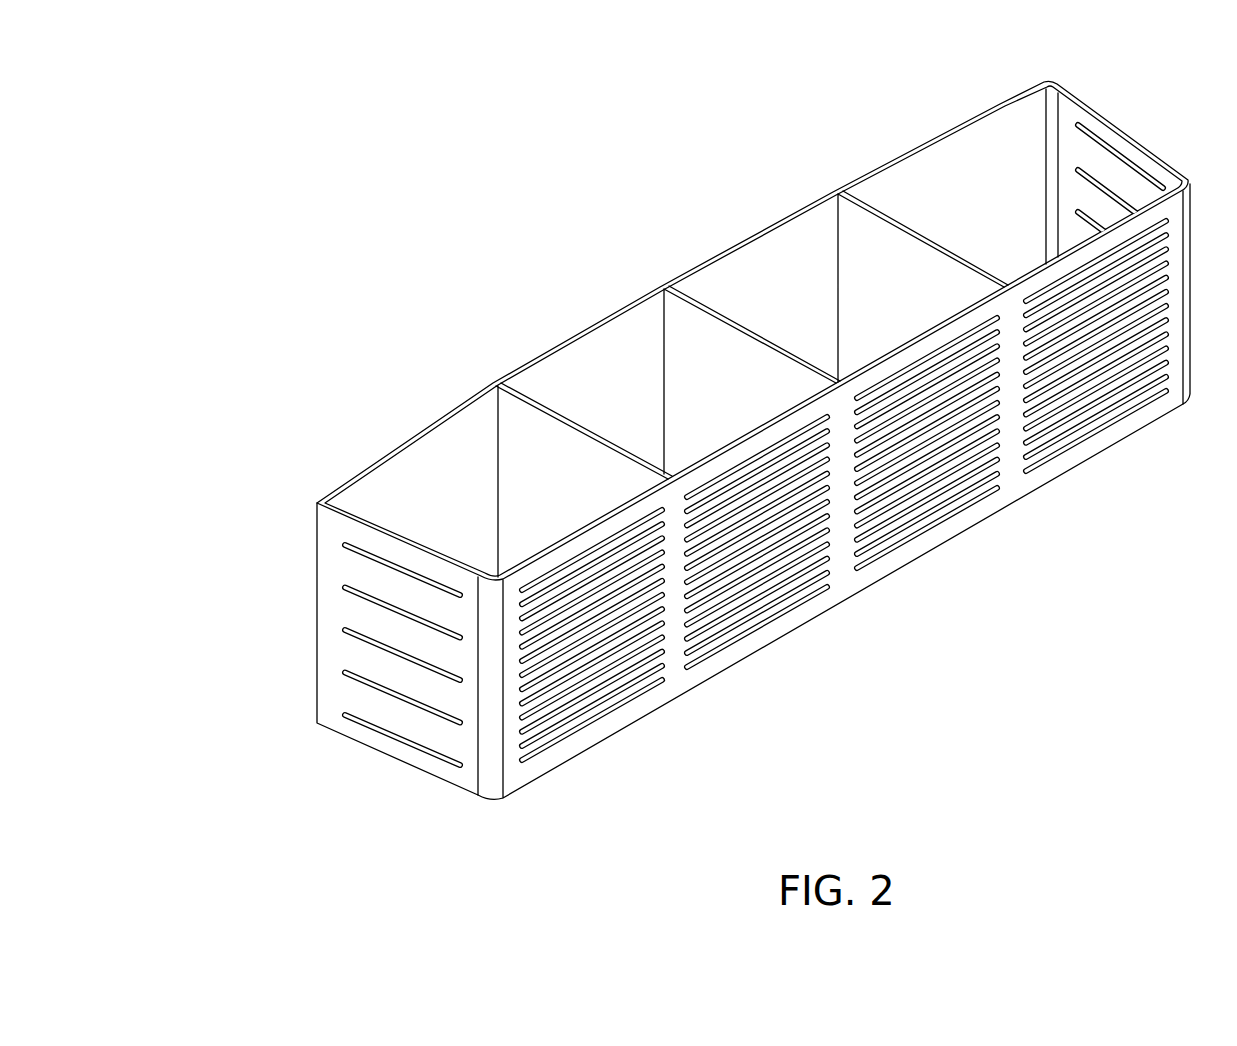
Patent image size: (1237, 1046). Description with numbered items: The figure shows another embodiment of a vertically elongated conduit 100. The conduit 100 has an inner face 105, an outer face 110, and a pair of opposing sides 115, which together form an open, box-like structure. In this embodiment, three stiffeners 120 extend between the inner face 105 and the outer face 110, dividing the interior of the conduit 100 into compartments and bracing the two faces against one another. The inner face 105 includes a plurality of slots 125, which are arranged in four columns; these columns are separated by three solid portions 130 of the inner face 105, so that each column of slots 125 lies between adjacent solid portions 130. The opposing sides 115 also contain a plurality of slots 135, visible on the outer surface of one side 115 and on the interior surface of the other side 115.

The conduit 100 is at (438, 221).
The inner face 105 is at (737, 662).
The outer face 110 is at (578, 332).
The opposing sides 115 is at (403, 763).
The stiffeners 120 is at (496, 400).
The slots 125 is at (600, 722).
The solid portions 130 is at (677, 668).
The slots 135 is at (365, 682).